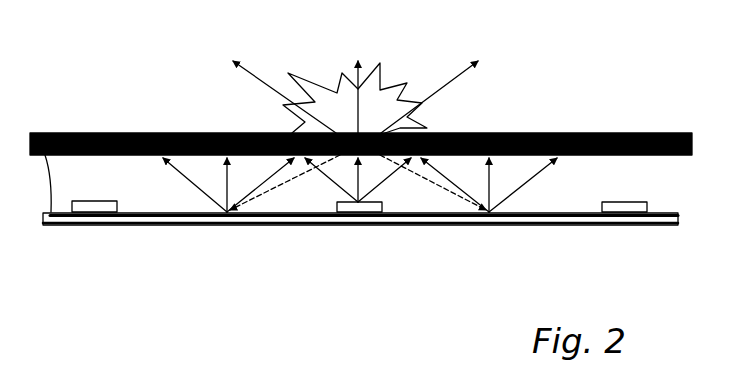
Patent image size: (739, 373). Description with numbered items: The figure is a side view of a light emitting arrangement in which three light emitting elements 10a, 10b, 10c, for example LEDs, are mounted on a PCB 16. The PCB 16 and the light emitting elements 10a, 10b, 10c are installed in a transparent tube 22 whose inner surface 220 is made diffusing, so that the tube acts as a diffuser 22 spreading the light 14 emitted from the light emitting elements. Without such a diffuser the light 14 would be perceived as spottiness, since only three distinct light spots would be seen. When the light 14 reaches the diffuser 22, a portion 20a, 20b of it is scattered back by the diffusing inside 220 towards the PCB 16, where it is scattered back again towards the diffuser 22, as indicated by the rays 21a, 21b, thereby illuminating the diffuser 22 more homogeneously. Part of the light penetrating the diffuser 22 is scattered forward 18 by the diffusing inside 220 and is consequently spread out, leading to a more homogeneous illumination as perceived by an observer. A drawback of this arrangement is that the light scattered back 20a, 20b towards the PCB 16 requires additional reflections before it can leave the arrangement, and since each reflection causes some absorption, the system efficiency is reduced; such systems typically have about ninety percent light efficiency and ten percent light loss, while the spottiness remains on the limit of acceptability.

The light emitting element 10a is at (100, 212).
The light emitting element 10b is at (365, 210).
The light emitting element 10c is at (625, 212).
The light 14 is at (396, 190).
The PCB 16 is at (200, 225).
The forward scattered light 18 is at (404, 52).
The back-scattered light portion 20a is at (280, 186).
The back-scattered light portion 20b is at (443, 192).
The re-scattered light 21a is at (177, 170).
The re-scattered light 21b is at (533, 177).
The transparent tube 22 is at (43, 133).
The inner surface 220 is at (47, 225).